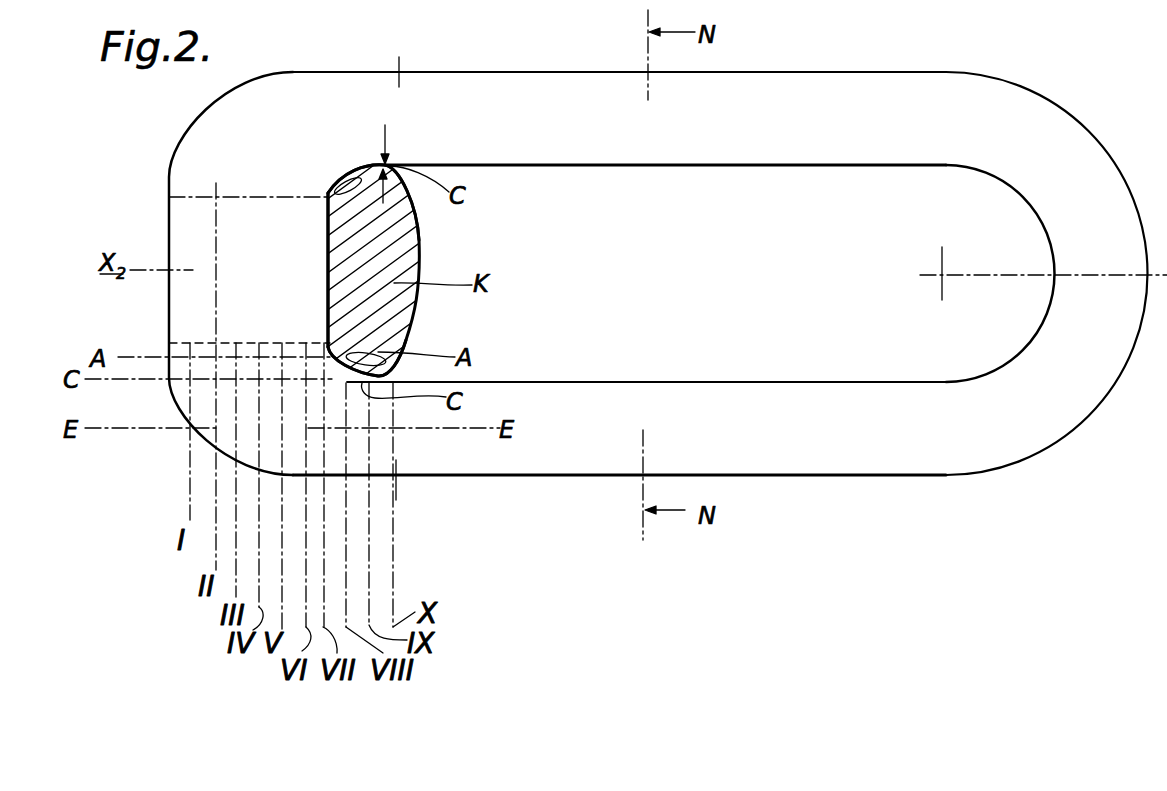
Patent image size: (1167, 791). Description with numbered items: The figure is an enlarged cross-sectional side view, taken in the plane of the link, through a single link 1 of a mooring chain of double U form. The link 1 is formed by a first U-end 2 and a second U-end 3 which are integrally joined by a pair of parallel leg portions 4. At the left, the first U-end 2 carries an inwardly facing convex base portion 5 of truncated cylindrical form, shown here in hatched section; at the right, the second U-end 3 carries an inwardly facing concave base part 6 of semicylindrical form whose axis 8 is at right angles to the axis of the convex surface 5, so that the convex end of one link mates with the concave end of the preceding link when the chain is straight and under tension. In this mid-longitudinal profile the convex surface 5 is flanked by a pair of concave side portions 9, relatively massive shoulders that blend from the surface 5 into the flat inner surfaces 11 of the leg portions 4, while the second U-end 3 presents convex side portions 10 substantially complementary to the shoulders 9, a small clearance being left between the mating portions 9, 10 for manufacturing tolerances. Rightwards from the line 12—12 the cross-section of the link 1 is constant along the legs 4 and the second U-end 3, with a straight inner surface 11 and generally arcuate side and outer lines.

The link 1 is at (642, 283).
The first U-end 2 is at (181, 234).
The second U-end 3 is at (1097, 170).
The parallel leg portions 4 is at (808, 86).
The convex base portion 5 is at (298, 281).
The concave base part 6 is at (1050, 303).
The axis of concave surface 8 is at (946, 273).
The concave side portions 9 is at (356, 170).
The convex side portions 10 is at (335, 192).
The flat inner surfaces 11 is at (327, 303).
The line 12— 12 is at (401, 69).